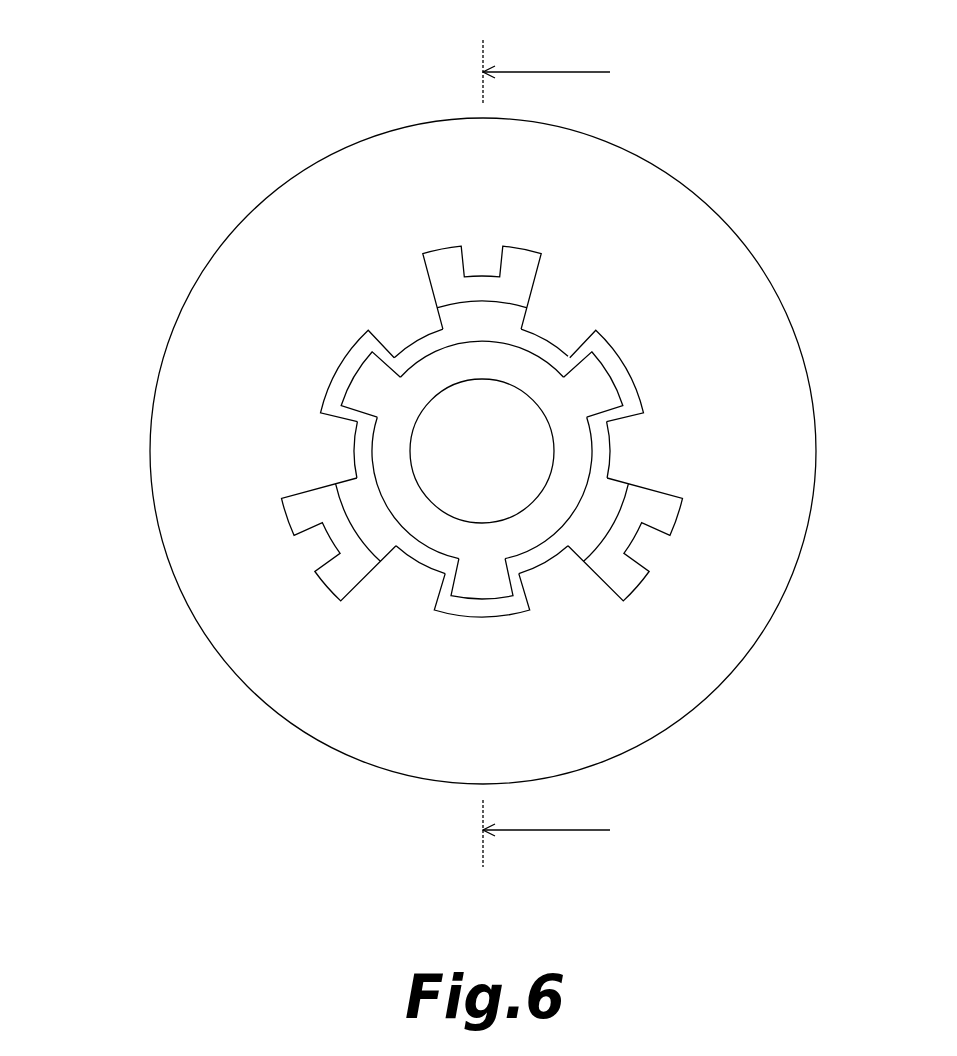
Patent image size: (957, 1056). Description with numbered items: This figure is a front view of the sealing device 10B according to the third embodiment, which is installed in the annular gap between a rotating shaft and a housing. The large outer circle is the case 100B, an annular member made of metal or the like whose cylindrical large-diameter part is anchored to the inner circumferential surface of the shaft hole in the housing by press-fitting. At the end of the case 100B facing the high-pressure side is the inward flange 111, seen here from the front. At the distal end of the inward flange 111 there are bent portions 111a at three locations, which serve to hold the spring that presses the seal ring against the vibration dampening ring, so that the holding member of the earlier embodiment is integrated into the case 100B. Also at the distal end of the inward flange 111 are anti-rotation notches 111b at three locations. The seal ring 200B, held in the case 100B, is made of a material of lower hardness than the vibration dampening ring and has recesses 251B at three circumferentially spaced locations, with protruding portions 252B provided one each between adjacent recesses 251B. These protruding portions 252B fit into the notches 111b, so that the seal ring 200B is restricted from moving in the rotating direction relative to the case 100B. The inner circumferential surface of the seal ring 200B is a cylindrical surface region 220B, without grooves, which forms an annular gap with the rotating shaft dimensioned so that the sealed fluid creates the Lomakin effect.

The sealing device 10B is at (720, 135).
The case 100B is at (277, 175).
The inward flange 111 is at (770, 484).
The bent portions 111a is at (478, 279).
The anti-rotation notches 111b is at (364, 346).
The seal ring 200B is at (593, 507).
The cylindrical surface region 220B is at (483, 381).
The recesses 251B is at (370, 460).
The protruding portions 252B is at (358, 368).